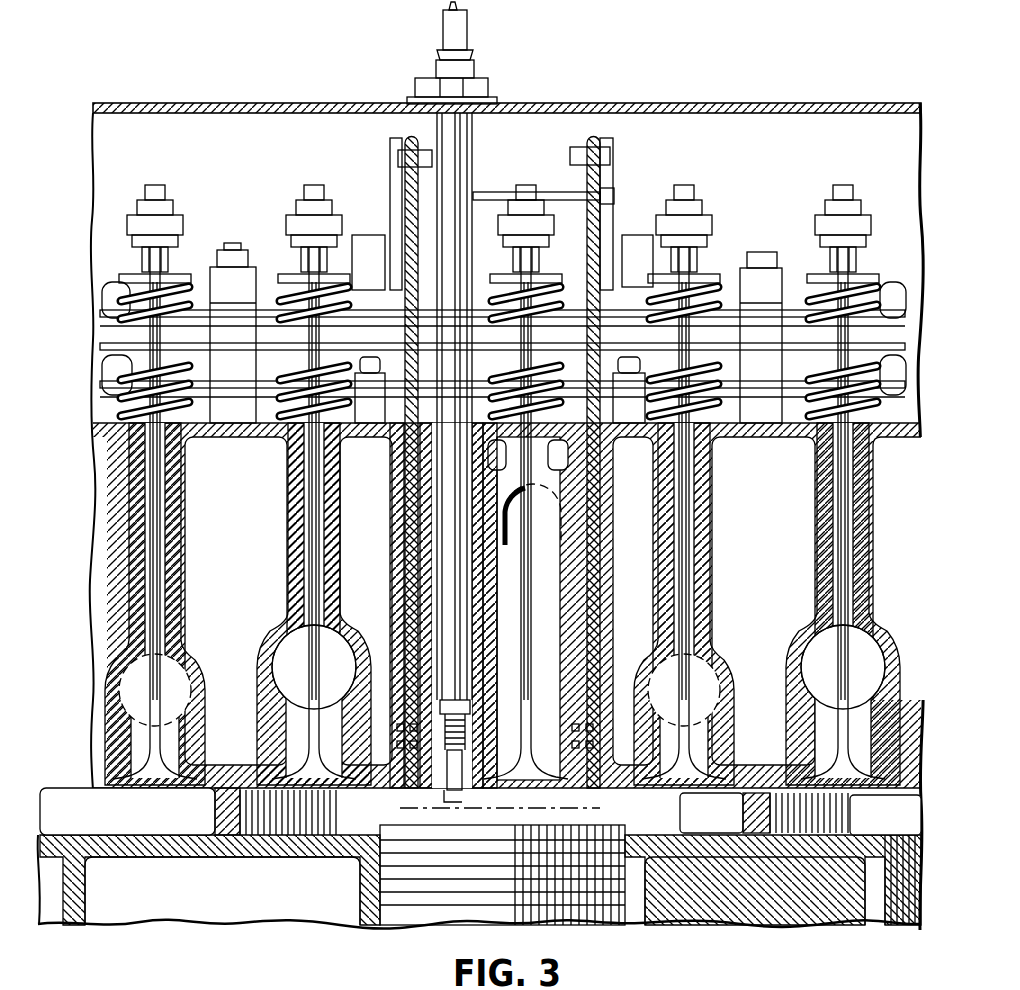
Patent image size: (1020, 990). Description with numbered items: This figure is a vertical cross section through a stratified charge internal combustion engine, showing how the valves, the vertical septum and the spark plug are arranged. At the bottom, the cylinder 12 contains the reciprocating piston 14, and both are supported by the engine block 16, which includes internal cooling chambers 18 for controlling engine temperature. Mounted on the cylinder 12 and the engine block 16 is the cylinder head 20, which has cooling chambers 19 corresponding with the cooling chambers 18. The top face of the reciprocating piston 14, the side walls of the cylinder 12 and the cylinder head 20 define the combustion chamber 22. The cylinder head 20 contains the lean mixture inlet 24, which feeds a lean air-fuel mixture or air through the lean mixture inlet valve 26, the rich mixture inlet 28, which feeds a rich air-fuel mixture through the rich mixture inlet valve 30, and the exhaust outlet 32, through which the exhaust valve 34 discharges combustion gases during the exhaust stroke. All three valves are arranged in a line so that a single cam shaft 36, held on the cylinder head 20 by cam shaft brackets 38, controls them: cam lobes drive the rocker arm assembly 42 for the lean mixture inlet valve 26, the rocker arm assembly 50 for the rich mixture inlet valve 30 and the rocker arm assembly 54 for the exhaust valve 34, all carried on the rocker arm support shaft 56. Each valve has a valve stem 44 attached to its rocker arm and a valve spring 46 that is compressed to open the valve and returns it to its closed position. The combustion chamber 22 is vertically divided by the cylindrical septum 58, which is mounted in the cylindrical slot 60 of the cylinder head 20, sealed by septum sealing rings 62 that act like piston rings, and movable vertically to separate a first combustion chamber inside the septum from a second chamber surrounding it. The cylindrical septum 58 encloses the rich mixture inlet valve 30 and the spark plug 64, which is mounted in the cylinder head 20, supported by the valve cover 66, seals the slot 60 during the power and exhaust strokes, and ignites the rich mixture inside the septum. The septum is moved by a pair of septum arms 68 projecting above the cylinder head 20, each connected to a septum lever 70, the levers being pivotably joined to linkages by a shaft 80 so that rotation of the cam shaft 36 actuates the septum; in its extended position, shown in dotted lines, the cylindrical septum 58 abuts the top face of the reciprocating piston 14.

The cylinder 12 is at (90, 905).
The reciprocating piston 14 is at (580, 920).
The engine block 16 is at (230, 915).
The cooling chambers 18 is at (750, 918).
The cooling chambers 19 is at (217, 519).
The cylinder head 20 is at (105, 563).
The combustion chamber 22 is at (175, 825).
The lean mixture inlet 24 is at (128, 682).
The lean mixture inlet valve 26 is at (132, 795).
The rich mixture inlet 28 is at (548, 515).
The rich mixture inlet valve 30 is at (590, 802).
The exhaust outlet 32 is at (292, 645).
The exhaust valve 34 is at (400, 800).
The cam shaft 36 is at (112, 362).
The cam shaft brackets 38 is at (362, 236).
The rocker arm assembly 42 is at (135, 225).
The valve stem 44 is at (150, 492).
The valve spring 46 is at (732, 300).
The rocker arm assembly 50 is at (548, 228).
The rocker arm assembly 54 is at (297, 228).
The rocker arm support shaft 56 is at (790, 292).
The cylindrical septum 58 is at (410, 560).
The cylindrical slot 60 is at (402, 468).
The septum sealing rings 62 is at (580, 730).
The spark plug 64 is at (467, 145).
The valve cover 66 is at (210, 103).
The septum arms 68 is at (410, 132).
The septum lever 70 is at (395, 158).
The shaft 80 is at (492, 195).